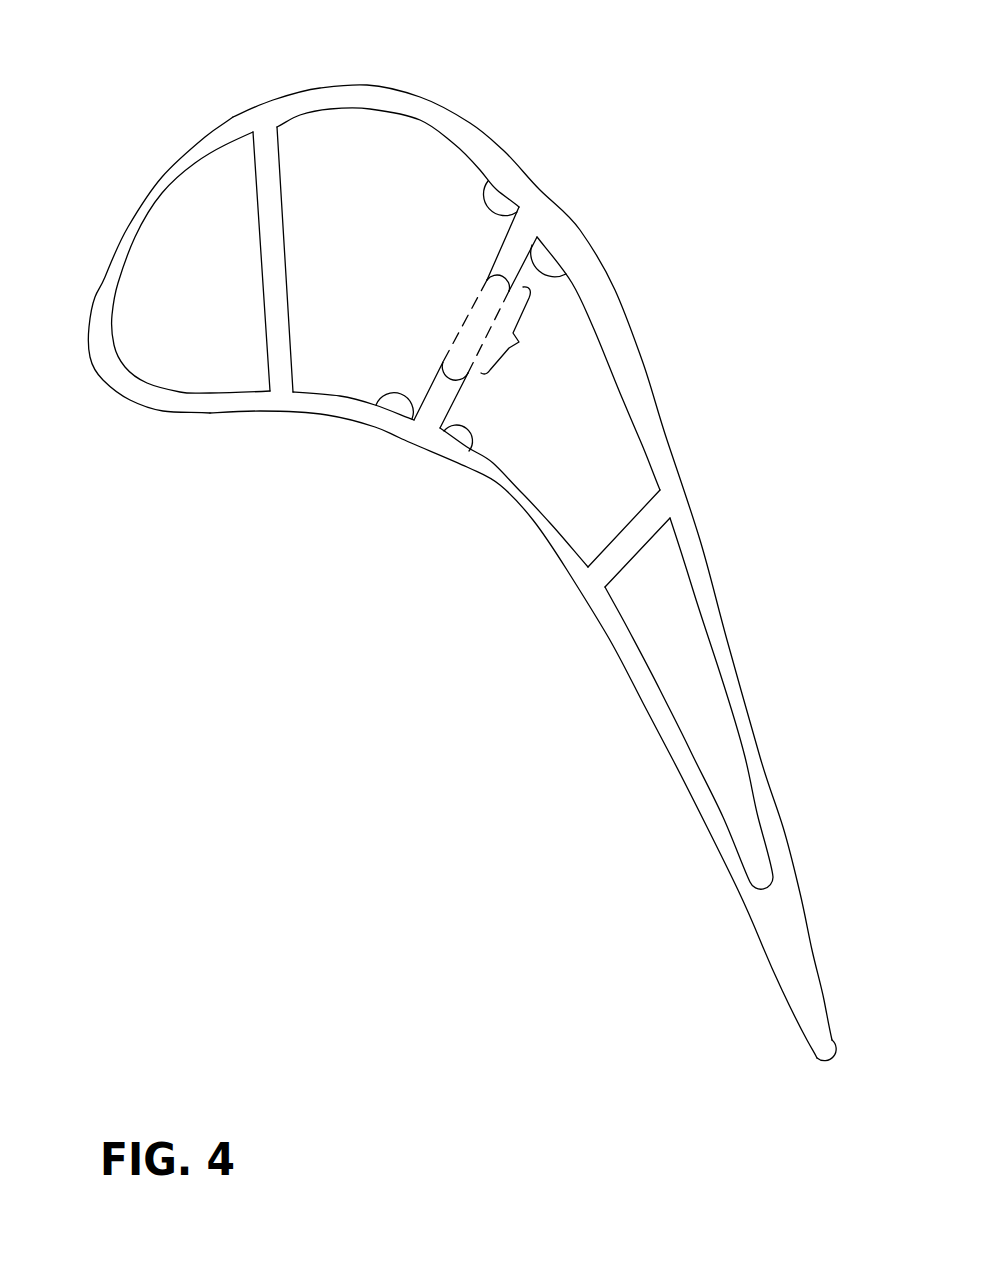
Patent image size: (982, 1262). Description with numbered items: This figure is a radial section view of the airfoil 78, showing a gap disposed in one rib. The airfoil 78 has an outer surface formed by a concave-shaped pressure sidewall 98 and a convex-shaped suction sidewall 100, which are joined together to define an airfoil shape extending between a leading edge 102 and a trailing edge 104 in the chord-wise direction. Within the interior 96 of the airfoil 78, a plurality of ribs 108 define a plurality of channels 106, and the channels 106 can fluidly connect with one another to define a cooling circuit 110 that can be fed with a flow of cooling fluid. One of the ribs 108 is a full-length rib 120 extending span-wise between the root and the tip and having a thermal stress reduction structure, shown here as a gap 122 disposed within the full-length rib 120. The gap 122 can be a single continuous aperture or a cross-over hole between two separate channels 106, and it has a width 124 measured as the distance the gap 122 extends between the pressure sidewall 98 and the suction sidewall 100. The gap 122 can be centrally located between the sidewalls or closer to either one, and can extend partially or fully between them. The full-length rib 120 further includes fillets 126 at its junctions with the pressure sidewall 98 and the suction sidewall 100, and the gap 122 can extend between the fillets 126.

The airfoil 78 is at (146, 122).
The interior 96 is at (373, 140).
The pressure sidewall 98 is at (454, 452).
The suction sidewall 100 is at (578, 237).
The leading edge 102 is at (90, 358).
The trailing edge 104 is at (828, 1067).
The channels 106 is at (208, 261).
The ribs 108 is at (278, 290).
The cooling circuit 110 is at (664, 567).
The full-length rib 120 is at (463, 383).
The gap 122 is at (463, 296).
The width 124 is at (519, 330).
The fillets 126 is at (489, 178).